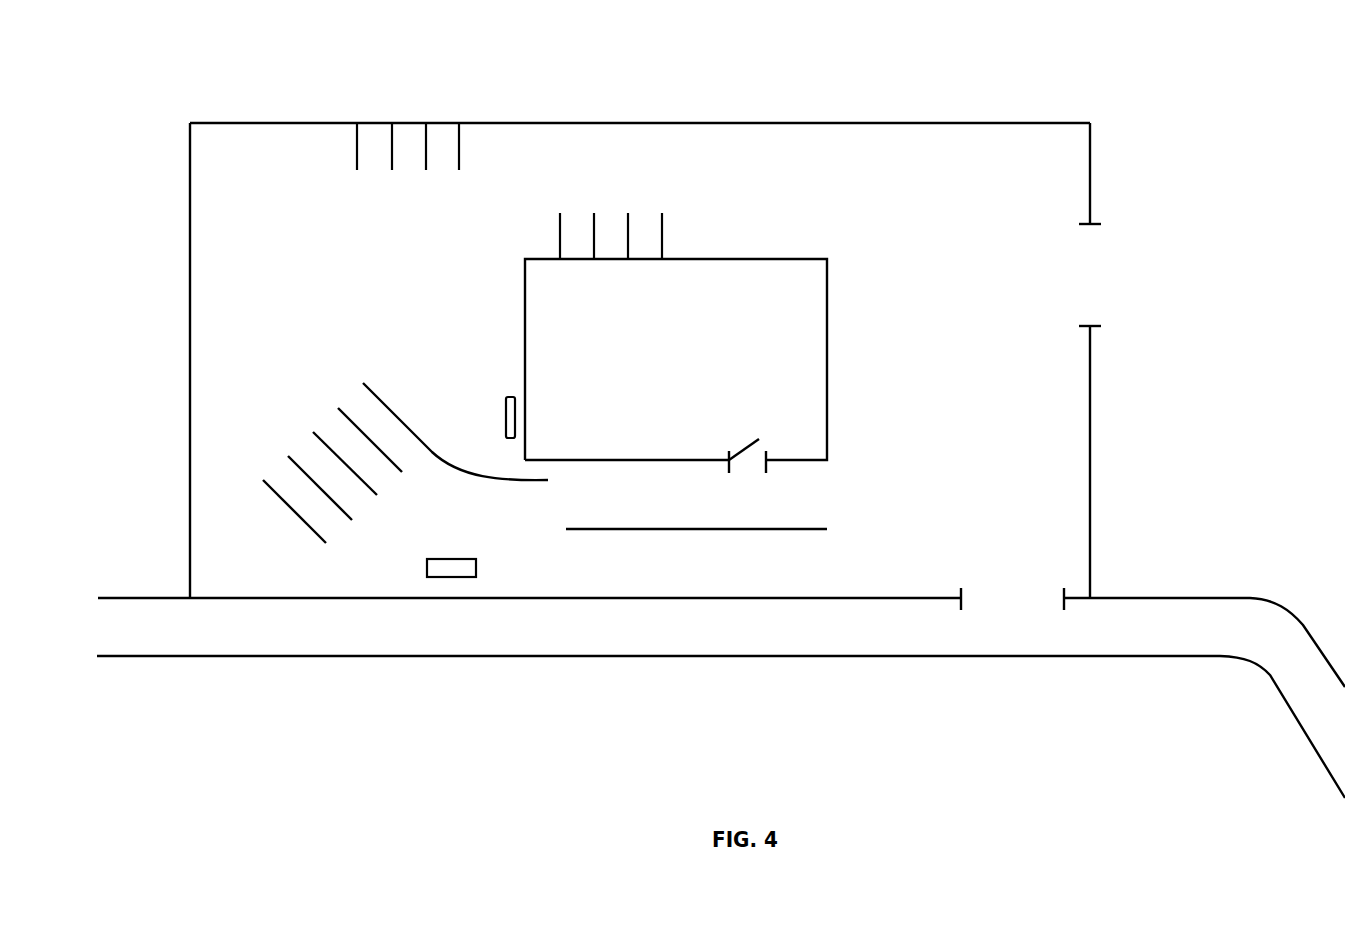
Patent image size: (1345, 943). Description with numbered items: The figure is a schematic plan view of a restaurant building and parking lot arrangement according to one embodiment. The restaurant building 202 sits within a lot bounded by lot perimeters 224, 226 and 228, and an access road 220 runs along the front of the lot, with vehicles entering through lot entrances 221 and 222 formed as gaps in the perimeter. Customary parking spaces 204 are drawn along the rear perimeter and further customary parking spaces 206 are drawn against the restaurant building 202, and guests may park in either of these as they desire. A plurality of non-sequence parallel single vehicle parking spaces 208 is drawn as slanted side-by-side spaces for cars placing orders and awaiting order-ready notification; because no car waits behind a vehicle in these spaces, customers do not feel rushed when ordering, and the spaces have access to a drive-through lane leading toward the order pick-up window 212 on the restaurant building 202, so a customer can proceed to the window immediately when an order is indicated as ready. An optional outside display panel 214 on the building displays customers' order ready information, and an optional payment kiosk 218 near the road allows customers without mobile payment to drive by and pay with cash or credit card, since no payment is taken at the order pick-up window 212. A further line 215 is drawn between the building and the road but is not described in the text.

The restaurant building 202 is at (694, 373).
The customary parking spaces 204 is at (412, 209).
The customary parking spaces 206 is at (649, 193).
The non-sequence parallel single vehicle parking spaces 208 is at (305, 404).
The order pick-up window 212 is at (746, 470).
The outside display panel 214 is at (505, 420).
The boundary line 215 is at (680, 545).
The payment kiosk 218 is at (427, 567).
The access road 220 is at (694, 637).
The lot entrance 221 is at (1007, 579).
The lot entrance 222 is at (1097, 274).
The lot perimeter 224 is at (805, 113).
The lot perimeter 226 is at (187, 361).
The lot perimeter 228 is at (1094, 452).